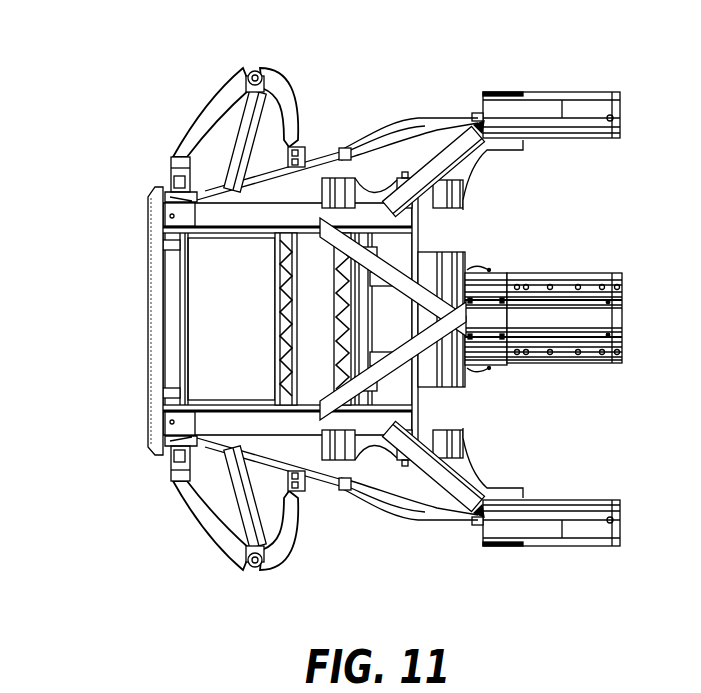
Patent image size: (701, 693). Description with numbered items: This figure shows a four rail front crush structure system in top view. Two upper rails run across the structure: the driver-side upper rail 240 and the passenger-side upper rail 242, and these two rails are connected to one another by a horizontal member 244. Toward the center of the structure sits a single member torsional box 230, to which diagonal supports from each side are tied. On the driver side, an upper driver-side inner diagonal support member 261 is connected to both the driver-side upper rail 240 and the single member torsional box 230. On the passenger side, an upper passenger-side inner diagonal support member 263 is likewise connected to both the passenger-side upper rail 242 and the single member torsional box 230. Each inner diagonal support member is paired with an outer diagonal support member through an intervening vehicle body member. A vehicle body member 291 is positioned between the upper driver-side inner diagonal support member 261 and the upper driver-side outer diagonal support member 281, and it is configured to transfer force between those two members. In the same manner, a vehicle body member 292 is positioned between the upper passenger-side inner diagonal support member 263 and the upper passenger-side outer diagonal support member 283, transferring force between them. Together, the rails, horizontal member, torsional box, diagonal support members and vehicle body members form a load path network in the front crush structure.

The single member torsional box 230 is at (532, 320).
The driver-side upper rail 240 is at (233, 423).
The passenger-side upper rail 242 is at (230, 215).
The horizontal member 244 is at (155, 343).
The upper driver-side inner diagonal support member 261 is at (385, 377).
The upper passenger-side inner diagonal support member 263 is at (393, 270).
The upper driver-side outer diagonal support member 281 is at (437, 468).
The upper passenger-side outer diagonal support member 283 is at (436, 172).
The vehicle body member 291 is at (380, 436).
The vehicle body member 292 is at (372, 197).